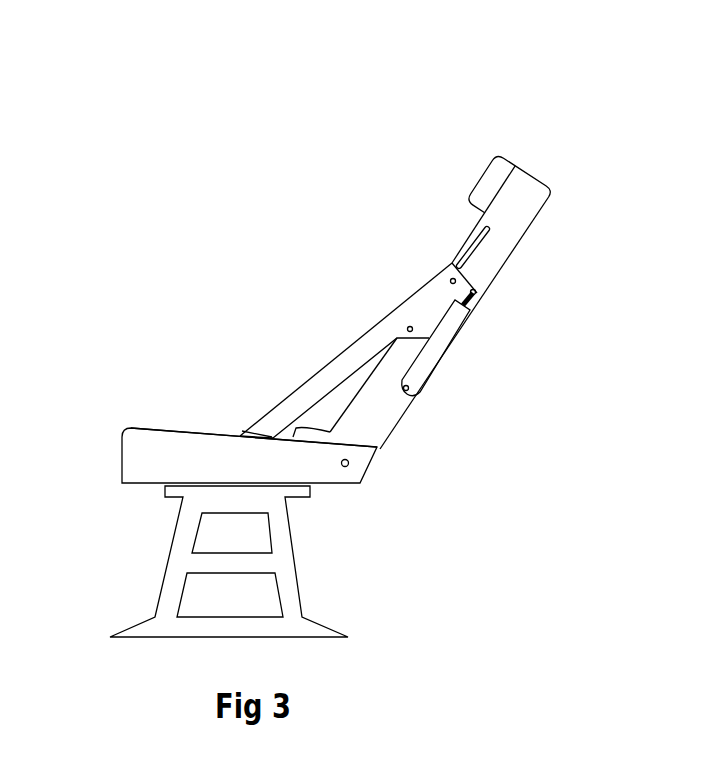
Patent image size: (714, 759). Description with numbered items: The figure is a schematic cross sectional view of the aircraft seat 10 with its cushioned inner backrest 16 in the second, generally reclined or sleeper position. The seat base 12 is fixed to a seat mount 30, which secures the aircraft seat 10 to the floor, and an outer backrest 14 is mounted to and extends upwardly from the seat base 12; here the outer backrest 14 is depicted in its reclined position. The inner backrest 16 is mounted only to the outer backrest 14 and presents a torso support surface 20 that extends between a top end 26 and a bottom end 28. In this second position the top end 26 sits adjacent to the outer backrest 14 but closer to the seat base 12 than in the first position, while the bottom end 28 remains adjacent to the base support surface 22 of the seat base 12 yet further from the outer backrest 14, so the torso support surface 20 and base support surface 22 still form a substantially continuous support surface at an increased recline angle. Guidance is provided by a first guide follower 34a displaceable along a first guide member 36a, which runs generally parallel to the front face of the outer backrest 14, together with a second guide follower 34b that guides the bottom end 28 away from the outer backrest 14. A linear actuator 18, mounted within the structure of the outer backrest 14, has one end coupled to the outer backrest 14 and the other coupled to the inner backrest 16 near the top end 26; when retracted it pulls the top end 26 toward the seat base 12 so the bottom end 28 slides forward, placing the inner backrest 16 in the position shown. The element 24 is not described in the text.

The aircraft seat 10 is at (363, 150).
The seat base 12 is at (133, 457).
The outer backrest 14 is at (388, 422).
The inner backrest 16 is at (317, 383).
The linear actuator 18 is at (430, 355).
The torso support surface 20 is at (357, 339).
The base support surface 22 is at (131, 428).
The headrest 24 is at (494, 176).
The top end 26 is at (452, 263).
The bottom end 28 is at (248, 433).
The seat mount 30 is at (298, 572).
The first guide follower 34a is at (410, 326).
The second guide follower 34b is at (457, 281).
The first guide member 36a is at (490, 243).